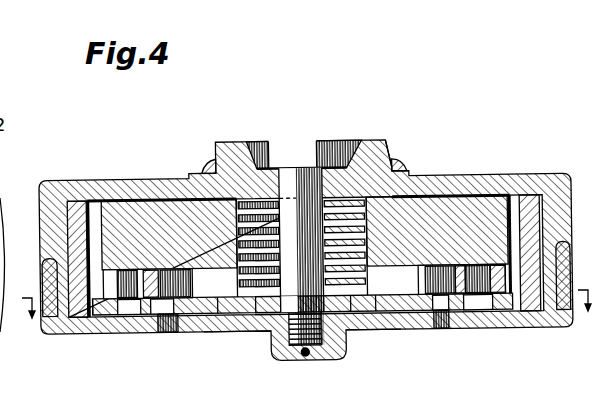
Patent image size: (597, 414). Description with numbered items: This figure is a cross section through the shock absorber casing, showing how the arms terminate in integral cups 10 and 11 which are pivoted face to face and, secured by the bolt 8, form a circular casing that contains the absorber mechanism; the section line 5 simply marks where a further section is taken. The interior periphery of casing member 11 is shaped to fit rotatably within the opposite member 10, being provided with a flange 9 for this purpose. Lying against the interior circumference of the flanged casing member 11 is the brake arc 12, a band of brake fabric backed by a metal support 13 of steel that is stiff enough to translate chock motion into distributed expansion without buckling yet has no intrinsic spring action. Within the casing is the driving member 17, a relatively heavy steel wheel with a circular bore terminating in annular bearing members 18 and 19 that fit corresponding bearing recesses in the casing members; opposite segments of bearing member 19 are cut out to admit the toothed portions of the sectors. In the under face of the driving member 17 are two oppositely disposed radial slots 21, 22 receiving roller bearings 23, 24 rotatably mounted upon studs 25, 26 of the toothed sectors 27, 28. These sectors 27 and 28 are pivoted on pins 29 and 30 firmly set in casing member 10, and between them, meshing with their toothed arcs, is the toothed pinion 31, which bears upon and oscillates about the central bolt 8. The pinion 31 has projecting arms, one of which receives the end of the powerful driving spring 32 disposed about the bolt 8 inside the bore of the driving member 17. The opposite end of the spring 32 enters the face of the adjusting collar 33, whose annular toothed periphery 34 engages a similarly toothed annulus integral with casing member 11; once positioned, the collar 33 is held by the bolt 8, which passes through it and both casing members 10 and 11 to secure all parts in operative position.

The section line 5 is at (306, 318).
The bolt 8 is at (300, 188).
The flange 9 is at (45, 281).
The cup 10 is at (481, 322).
The cup 11 is at (467, 178).
The brake arc 12 is at (73, 199).
The metal support 13 is at (98, 198).
The driving member 17 is at (151, 217).
The annular bearing member 18 is at (222, 172).
The annular bearing member 19 is at (200, 340).
The radial slot 21 is at (128, 306).
The radial slot 22 is at (428, 335).
The roller bearing 23 is at (110, 293).
The roller bearing 24 is at (565, 280).
The stud 25 is at (98, 328).
The stud 26 is at (497, 307).
The toothed sector 27 is at (190, 325).
The toothed sector 28 is at (418, 335).
The pin 29 is at (150, 328).
The pin 30 is at (446, 326).
The toothed pinion 31 is at (238, 343).
The driving spring 32 is at (347, 348).
The adjusting collar 33 is at (384, 162).
The annular toothed periphery 34 is at (390, 165).